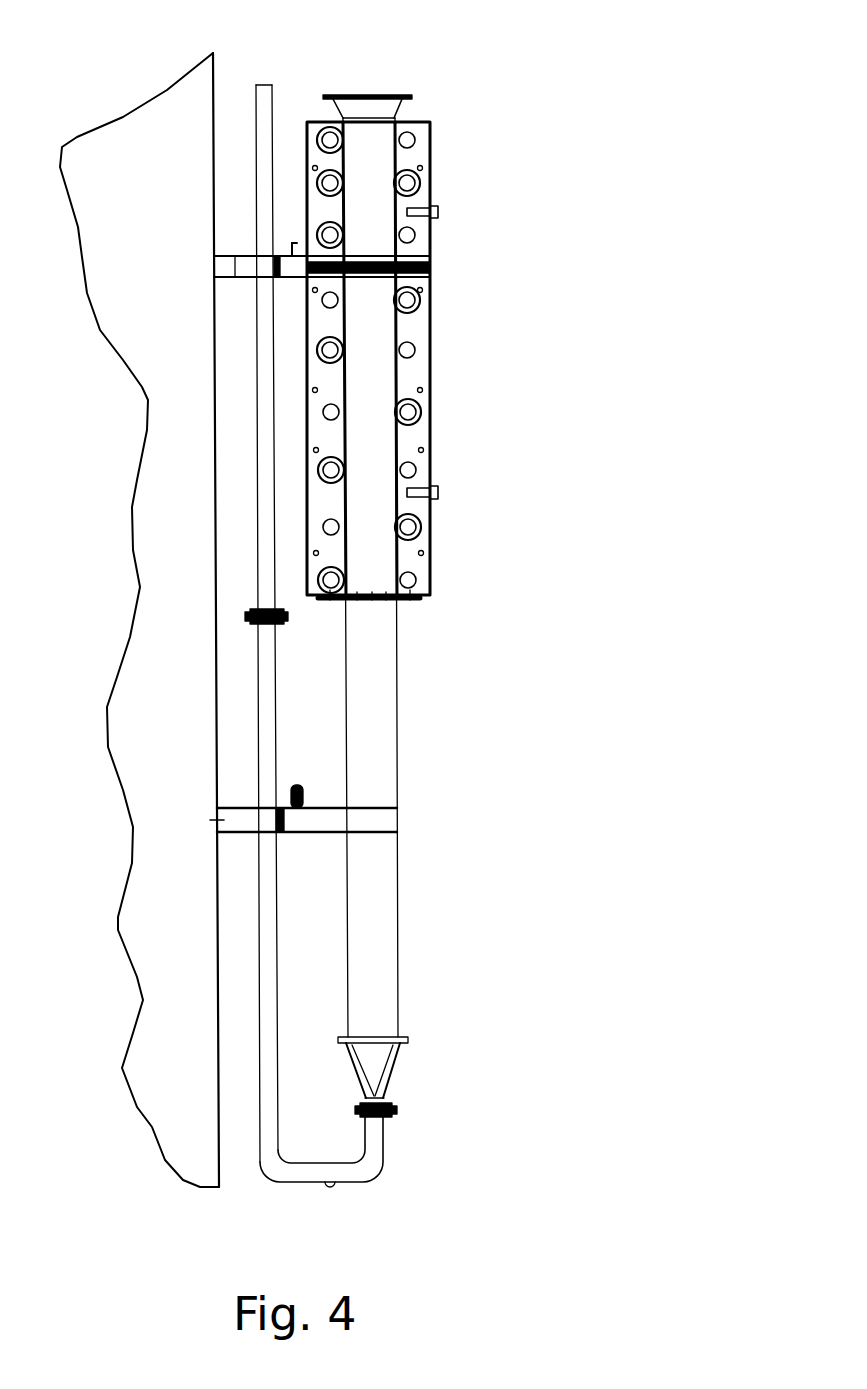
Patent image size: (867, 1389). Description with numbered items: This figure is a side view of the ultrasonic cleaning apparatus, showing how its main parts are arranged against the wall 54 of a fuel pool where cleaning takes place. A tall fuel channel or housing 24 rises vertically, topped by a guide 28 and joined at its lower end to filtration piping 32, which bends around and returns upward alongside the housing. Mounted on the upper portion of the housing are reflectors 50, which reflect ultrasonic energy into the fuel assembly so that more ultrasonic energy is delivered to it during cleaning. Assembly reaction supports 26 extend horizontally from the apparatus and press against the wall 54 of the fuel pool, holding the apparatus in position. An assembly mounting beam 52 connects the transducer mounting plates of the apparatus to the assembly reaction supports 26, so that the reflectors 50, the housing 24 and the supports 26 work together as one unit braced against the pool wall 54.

The fuel channel or housing 24 is at (402, 872).
The assembly reaction support 26 is at (232, 257).
The guide 28 is at (378, 97).
The filtration piping 32 is at (371, 1175).
The reflectors 50 is at (308, 320).
The assembly mounting beam 52 is at (417, 252).
The wall 54 is at (214, 83).